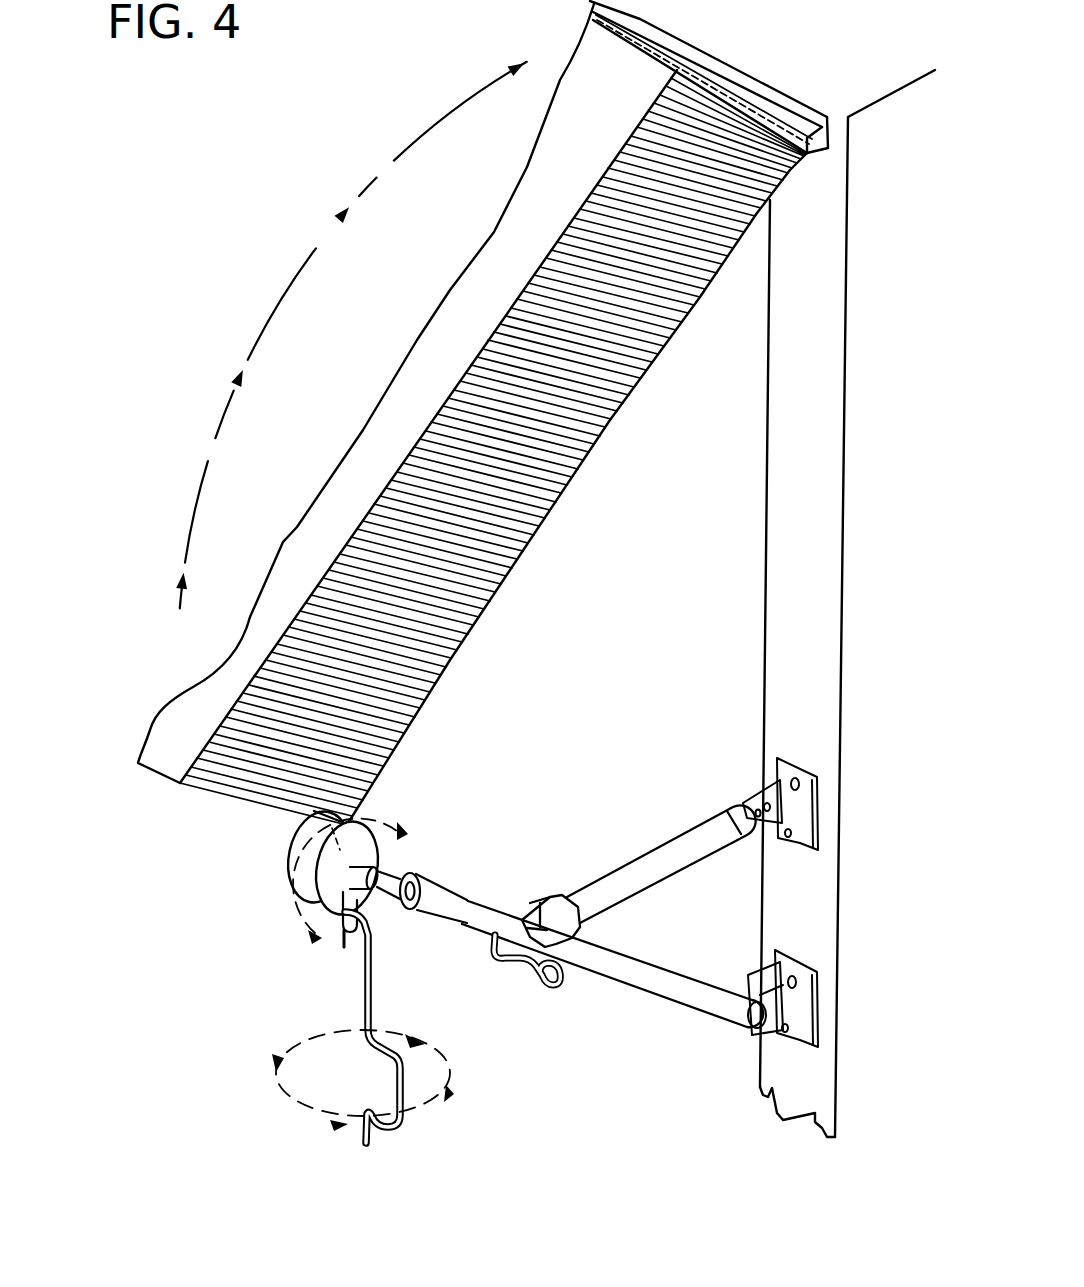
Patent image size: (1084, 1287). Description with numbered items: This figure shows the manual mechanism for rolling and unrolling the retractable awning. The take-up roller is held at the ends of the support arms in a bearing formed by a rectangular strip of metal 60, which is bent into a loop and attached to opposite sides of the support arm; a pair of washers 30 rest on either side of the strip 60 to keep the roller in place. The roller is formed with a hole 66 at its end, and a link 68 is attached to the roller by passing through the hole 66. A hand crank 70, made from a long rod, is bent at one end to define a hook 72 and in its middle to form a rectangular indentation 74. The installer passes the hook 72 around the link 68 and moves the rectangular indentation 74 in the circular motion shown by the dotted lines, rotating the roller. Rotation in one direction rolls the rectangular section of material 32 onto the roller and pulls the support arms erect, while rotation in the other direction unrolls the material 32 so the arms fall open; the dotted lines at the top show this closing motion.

The washers 30 is at (373, 840).
The rectangular section of material 32 is at (210, 670).
The rectangular strip of metal 60 is at (297, 885).
The hole 66 is at (380, 868).
The link 68 is at (300, 908).
The hand crank 70 is at (366, 1145).
The hook 72 is at (357, 950).
The rectangular indentation 74 is at (403, 1092).